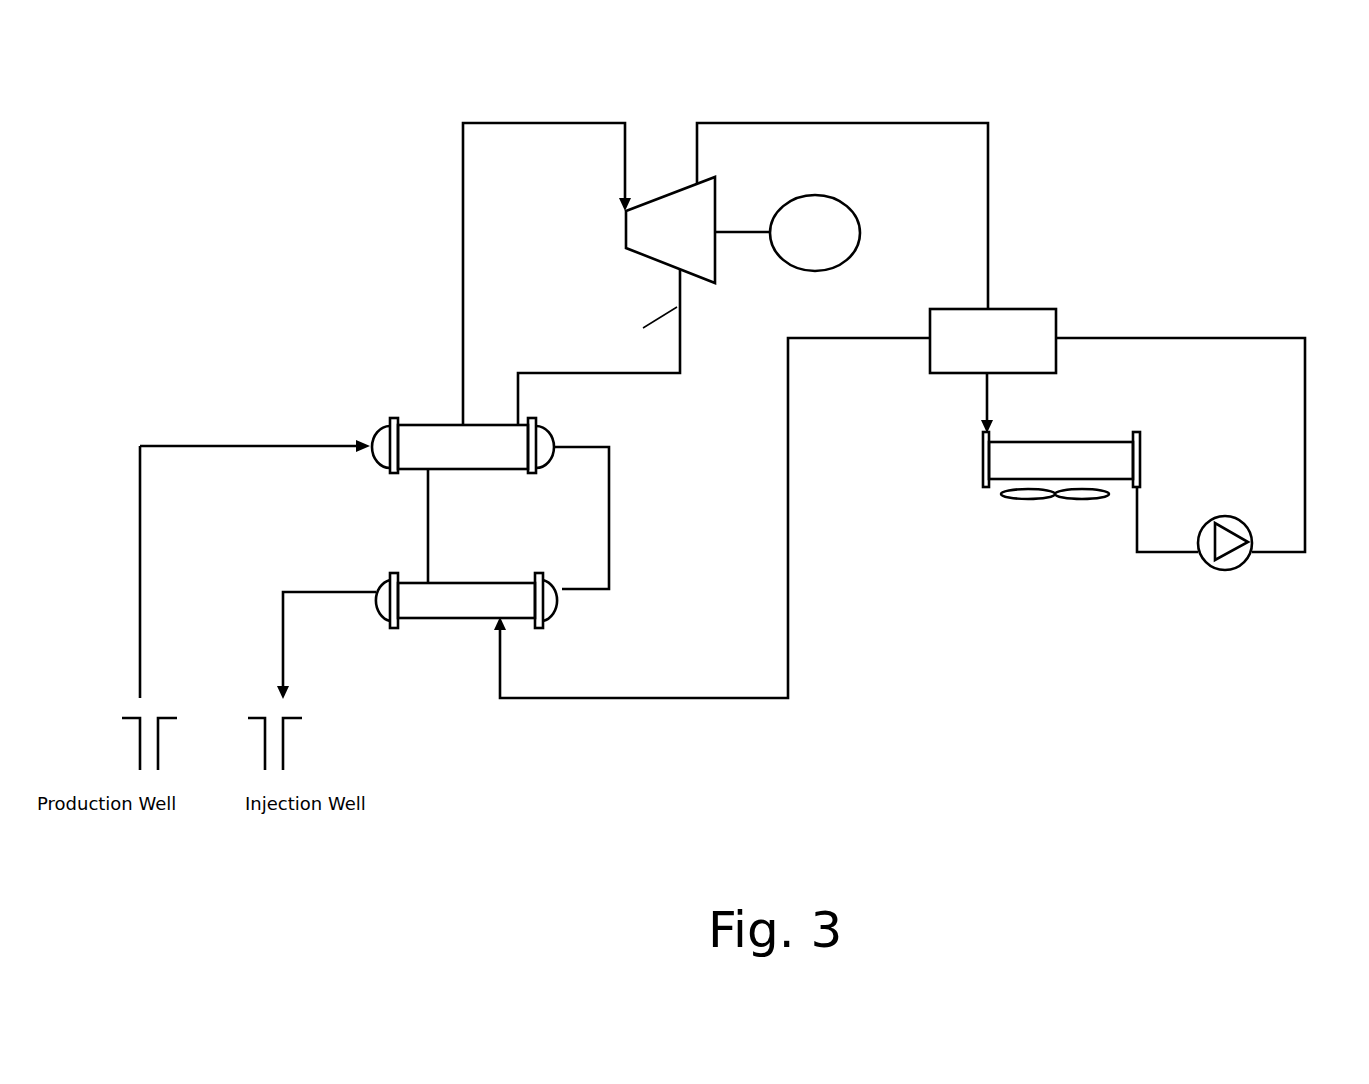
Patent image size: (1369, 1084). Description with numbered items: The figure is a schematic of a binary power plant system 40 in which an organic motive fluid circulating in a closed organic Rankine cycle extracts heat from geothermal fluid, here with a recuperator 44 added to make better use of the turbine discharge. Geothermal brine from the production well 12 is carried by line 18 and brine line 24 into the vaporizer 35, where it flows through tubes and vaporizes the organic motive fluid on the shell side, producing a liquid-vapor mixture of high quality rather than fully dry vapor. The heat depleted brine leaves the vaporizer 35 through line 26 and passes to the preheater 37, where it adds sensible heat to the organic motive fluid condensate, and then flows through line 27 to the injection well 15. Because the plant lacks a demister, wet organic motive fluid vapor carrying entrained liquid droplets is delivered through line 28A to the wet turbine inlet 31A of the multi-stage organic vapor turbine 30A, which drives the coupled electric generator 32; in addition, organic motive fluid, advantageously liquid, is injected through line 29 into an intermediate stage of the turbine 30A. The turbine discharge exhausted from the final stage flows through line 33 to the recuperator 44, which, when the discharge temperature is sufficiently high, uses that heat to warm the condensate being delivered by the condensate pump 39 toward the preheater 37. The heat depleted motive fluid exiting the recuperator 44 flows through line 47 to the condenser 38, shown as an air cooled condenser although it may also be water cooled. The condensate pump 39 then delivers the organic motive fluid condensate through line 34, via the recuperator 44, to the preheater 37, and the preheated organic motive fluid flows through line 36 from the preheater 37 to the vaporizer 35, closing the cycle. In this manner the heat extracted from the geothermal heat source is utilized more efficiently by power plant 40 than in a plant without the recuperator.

The production well 12 is at (158, 740).
The injection well 15 is at (283, 740).
The line 18 is at (140, 530).
The brine line to vaporizer 24 is at (208, 443).
The line 26 is at (610, 517).
The line 27 is at (322, 593).
The line 28A is at (465, 308).
The line 29 is at (682, 345).
The multi-stage organic vapor turbine 30A is at (677, 190).
The turbine inlet 31A is at (622, 208).
The electric generator 32 is at (823, 210).
The line 33 is at (833, 122).
The line 34 is at (1307, 457).
The vaporizer 35 is at (427, 428).
The working fluid line between vaporizer and preheater 36 is at (432, 509).
The preheater 37 is at (412, 605).
The condenser 38 is at (1040, 450).
The organic motive fluid condensate pump 39 is at (1213, 573).
The binary power plant system 40 is at (256, 223).
The recuperator 44 is at (1033, 308).
The line 47 is at (985, 396).